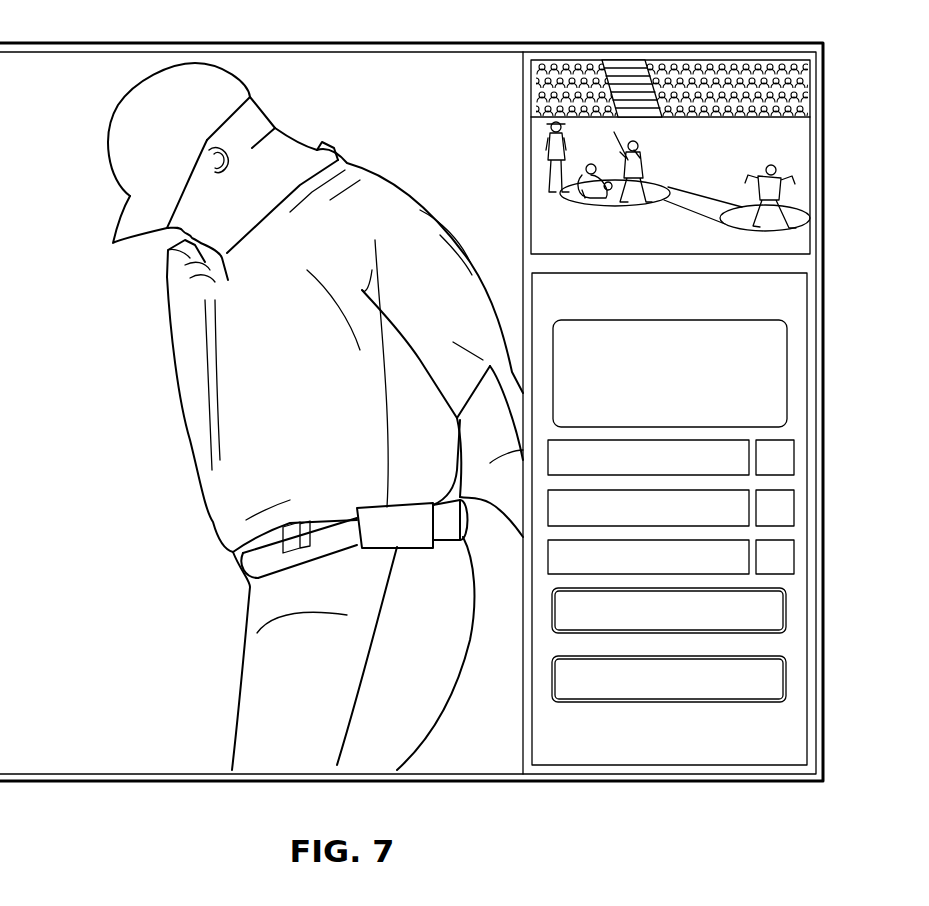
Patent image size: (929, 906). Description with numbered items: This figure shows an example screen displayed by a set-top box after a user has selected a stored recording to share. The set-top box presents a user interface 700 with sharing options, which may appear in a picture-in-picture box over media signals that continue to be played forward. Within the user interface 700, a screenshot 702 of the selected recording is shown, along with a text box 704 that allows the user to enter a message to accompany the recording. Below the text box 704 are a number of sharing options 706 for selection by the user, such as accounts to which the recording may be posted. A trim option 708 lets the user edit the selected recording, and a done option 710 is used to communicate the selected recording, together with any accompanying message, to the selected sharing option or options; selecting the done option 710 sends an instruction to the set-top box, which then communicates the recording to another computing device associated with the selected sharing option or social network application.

The user interface 700 is at (808, 327).
The screenshot 702 is at (533, 130).
The text box 704 is at (787, 372).
The sharing options 706 is at (803, 507).
The trim option 708 is at (784, 608).
The done option 710 is at (784, 677).